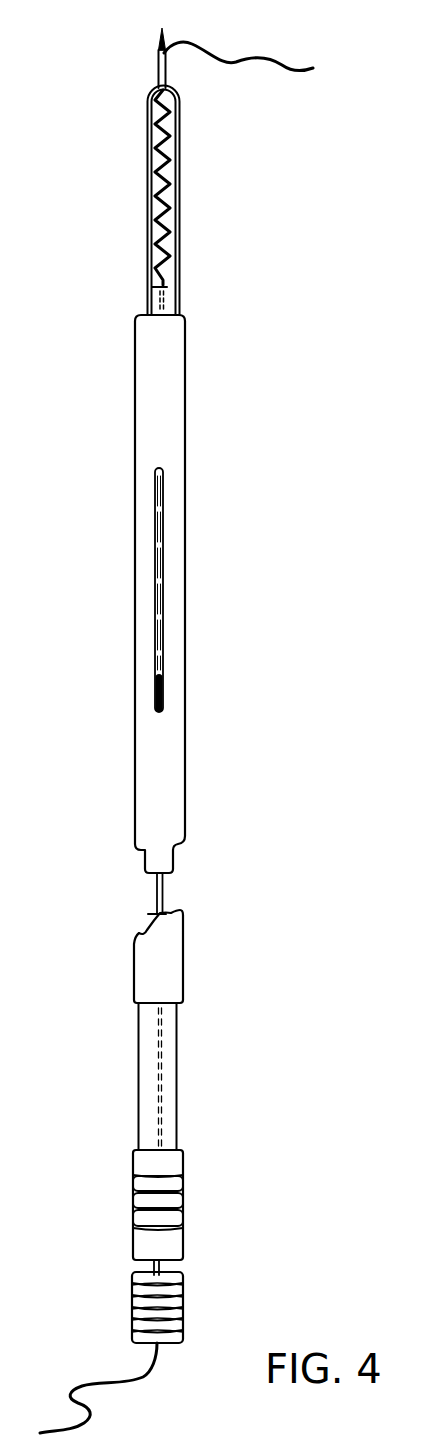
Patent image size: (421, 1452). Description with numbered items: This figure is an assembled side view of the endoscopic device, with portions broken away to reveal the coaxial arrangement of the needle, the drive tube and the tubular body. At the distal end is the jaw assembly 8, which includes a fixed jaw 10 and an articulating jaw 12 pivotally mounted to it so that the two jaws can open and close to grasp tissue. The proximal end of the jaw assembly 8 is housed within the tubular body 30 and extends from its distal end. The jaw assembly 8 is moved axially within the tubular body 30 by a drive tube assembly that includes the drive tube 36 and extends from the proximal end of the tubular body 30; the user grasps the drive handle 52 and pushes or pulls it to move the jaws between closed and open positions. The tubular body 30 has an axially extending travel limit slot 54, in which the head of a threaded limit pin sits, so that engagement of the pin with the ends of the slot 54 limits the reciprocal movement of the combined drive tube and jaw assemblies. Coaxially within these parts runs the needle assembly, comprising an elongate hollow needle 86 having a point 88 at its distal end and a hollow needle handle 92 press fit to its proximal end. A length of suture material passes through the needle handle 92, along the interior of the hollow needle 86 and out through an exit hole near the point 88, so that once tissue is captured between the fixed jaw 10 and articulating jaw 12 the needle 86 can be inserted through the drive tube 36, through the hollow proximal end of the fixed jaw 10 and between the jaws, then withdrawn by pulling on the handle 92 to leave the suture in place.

The jaw assembly 8 is at (214, 157).
The fixed jaw 10 is at (192, 245).
The articulating jaw 12 is at (137, 230).
The tubular body 30 is at (122, 770).
The drive tube 36 is at (147, 916).
The drive handle 52 is at (185, 1168).
The travel limit slot 54 is at (159, 572).
The elongate hollow needle 86 is at (164, 890).
The point 88 is at (158, 67).
The hollow needle handle 92 is at (187, 1284).